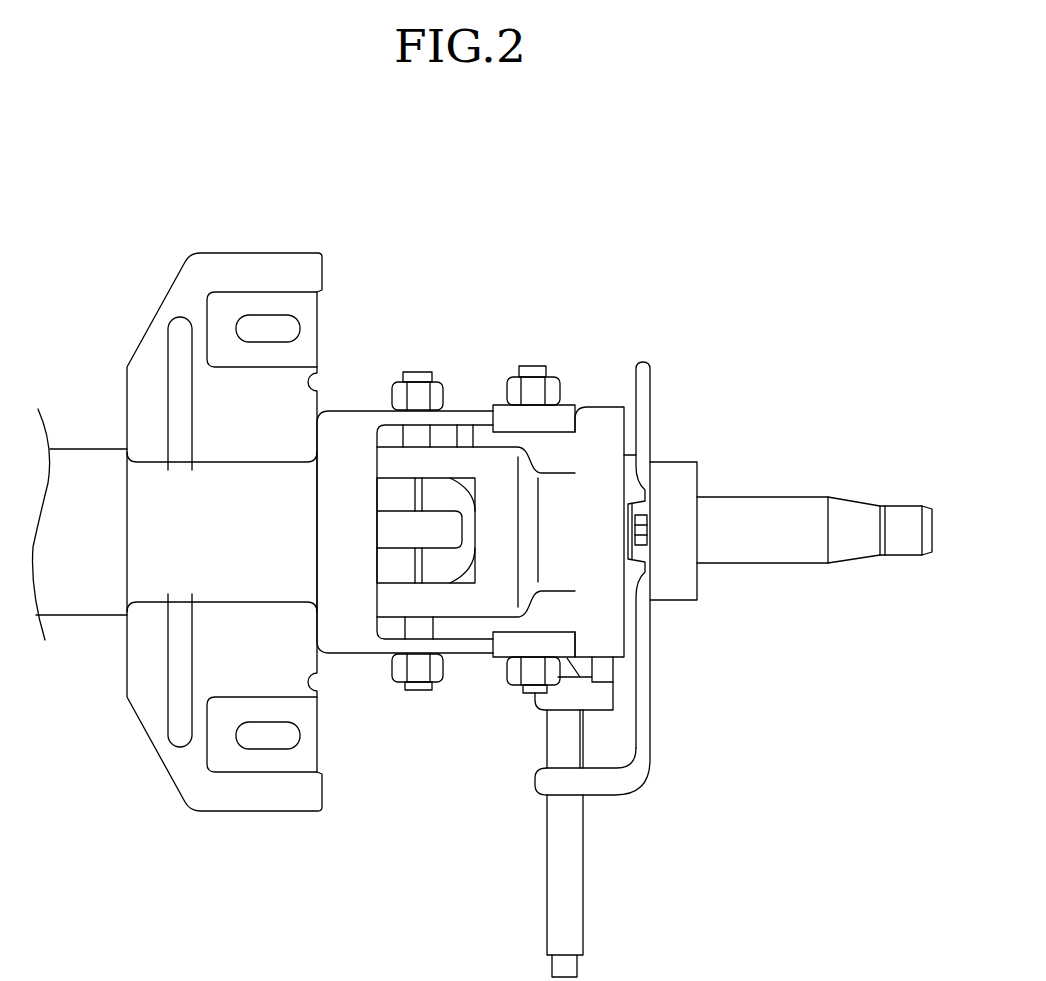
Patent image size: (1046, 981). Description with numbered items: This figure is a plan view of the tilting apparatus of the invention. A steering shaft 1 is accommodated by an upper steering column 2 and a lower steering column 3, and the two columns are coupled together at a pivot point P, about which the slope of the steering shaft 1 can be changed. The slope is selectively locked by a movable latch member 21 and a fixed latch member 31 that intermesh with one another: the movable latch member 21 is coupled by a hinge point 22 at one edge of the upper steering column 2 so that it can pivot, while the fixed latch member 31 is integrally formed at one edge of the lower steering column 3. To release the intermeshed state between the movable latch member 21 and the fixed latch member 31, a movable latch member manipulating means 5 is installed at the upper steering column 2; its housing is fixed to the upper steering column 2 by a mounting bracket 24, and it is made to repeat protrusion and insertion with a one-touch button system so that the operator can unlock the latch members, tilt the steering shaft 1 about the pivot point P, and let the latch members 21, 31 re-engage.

The steering shaft 1 is at (782, 498).
The upper steering column 2 is at (603, 425).
The lower steering column 3 is at (352, 448).
The movable latch member manipulating means 5 is at (588, 880).
The movable latch member 21 is at (532, 418).
The hinge point 22 is at (525, 695).
The mounting bracket 24 is at (652, 730).
The fixed latch member 31 is at (462, 418).
The pivot point P is at (418, 690).